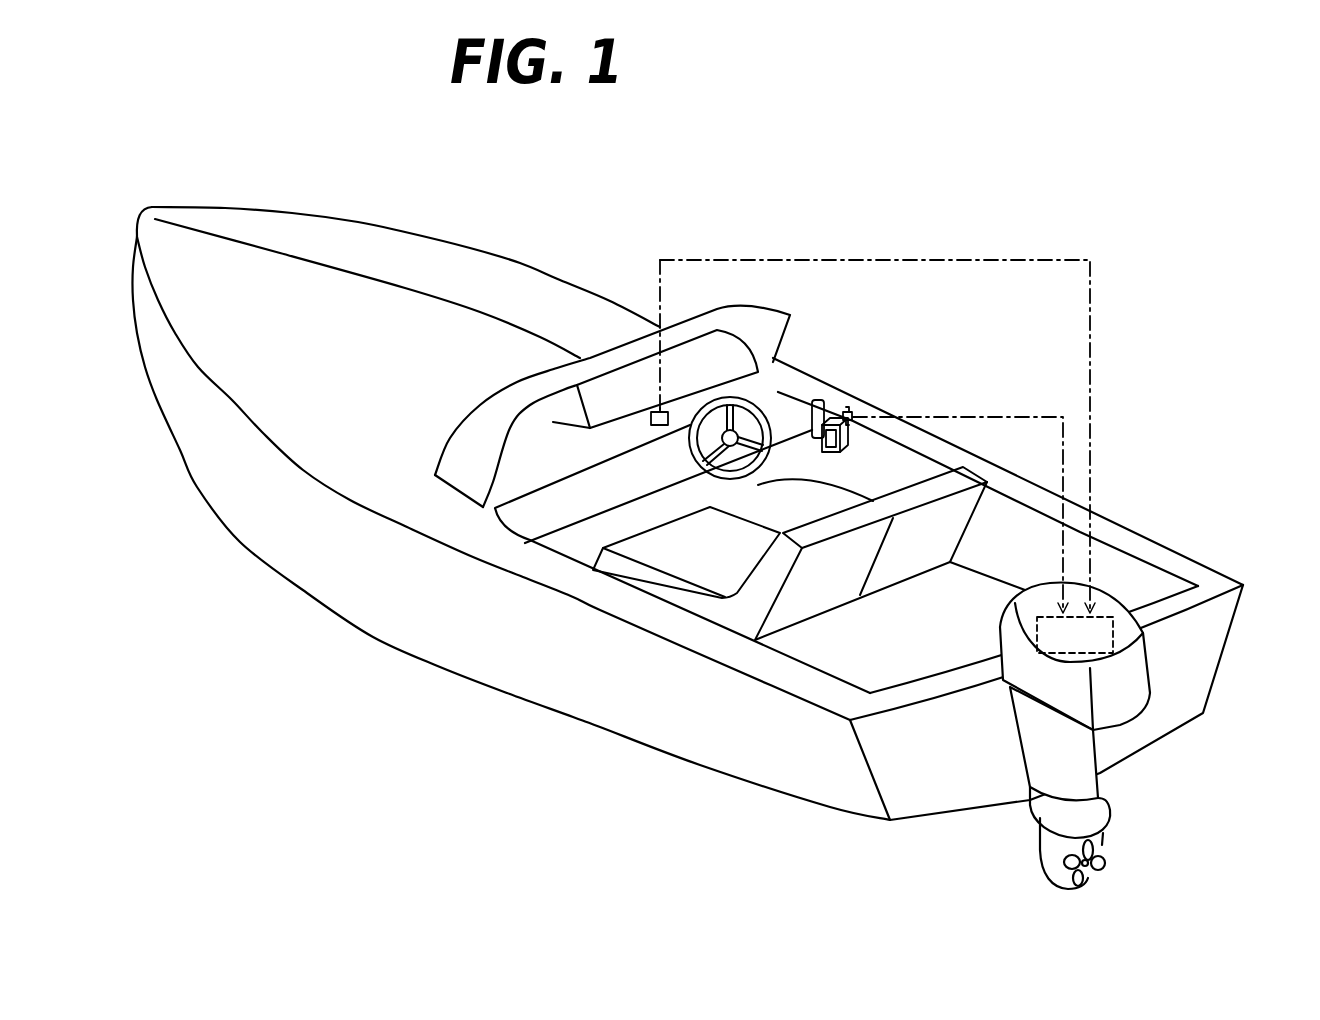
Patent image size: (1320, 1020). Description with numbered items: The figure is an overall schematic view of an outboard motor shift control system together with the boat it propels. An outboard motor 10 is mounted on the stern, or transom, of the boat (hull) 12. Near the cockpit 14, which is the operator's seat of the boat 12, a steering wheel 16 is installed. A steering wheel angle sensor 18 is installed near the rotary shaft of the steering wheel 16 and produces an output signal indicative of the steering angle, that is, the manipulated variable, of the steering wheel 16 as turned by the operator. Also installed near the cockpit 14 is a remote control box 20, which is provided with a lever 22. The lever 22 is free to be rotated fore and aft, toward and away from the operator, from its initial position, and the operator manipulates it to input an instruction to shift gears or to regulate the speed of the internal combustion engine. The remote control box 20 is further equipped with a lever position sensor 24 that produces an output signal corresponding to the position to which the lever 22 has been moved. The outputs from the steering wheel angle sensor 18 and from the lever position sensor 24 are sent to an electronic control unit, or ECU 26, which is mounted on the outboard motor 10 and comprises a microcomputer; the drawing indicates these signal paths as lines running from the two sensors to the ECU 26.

The outboard motor 10 is at (1028, 845).
The boat (hull) 12 is at (426, 233).
The cockpit 14 is at (771, 519).
The steering wheel 16 is at (766, 396).
The steering wheel angle sensor 18 is at (660, 427).
The remote control box 20 is at (848, 446).
The lever 22 is at (830, 398).
The lever position sensor 24 is at (860, 396).
The electronic control unit (ECU) 26 is at (1107, 660).